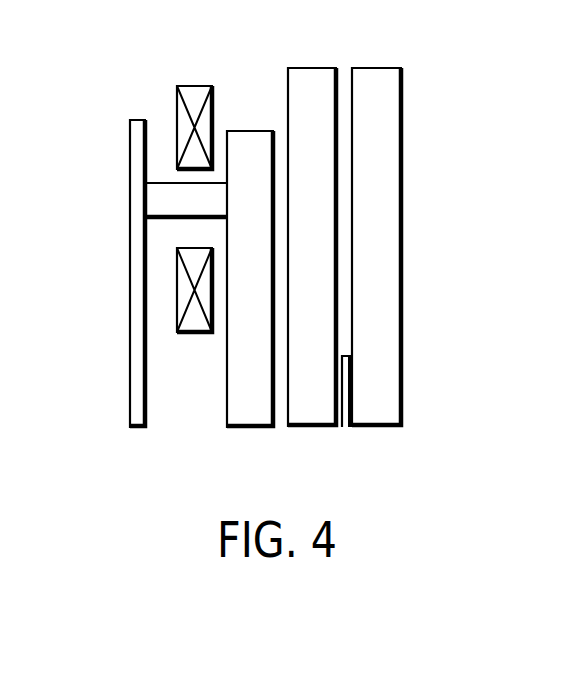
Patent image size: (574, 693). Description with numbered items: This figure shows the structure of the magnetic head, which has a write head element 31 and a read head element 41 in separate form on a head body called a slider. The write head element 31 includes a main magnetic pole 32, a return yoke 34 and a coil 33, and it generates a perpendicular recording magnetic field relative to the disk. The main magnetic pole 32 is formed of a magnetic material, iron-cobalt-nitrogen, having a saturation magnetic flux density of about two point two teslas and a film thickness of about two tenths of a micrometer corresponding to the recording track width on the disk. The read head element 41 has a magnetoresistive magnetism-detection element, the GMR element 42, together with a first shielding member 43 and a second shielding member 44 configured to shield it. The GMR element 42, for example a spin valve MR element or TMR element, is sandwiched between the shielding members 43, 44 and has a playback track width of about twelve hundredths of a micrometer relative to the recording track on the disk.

The write head element 31 is at (128, 51).
The main magnetic pole 32 is at (128, 362).
The coil 33 is at (176, 95).
The return yoke 34 is at (245, 430).
The read head element 41 is at (287, 51).
The GMR element 42 is at (346, 430).
The first shielding member 43 is at (300, 430).
The second shielding member 44 is at (394, 430).